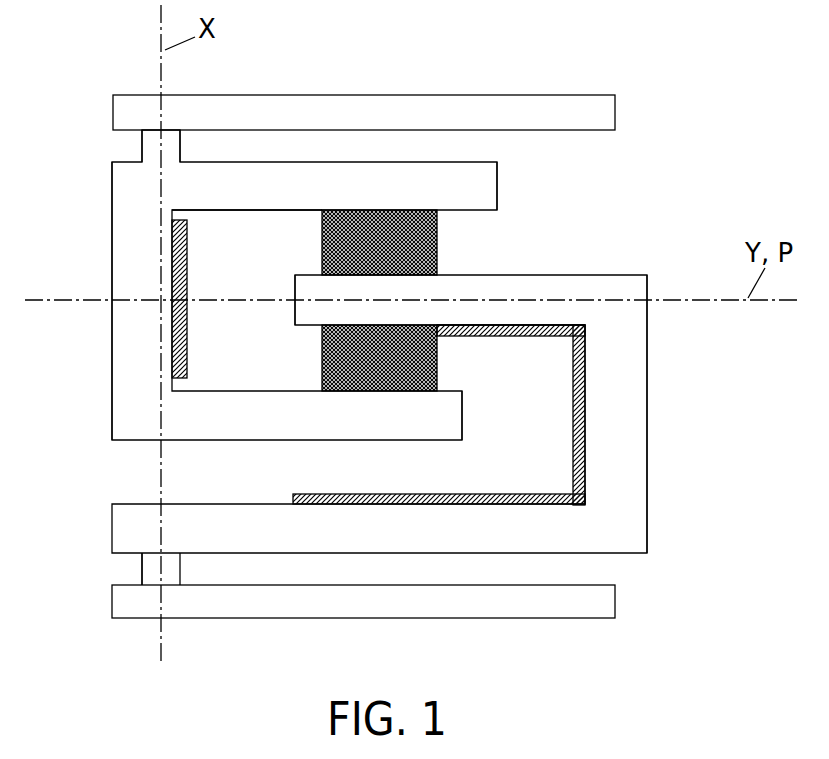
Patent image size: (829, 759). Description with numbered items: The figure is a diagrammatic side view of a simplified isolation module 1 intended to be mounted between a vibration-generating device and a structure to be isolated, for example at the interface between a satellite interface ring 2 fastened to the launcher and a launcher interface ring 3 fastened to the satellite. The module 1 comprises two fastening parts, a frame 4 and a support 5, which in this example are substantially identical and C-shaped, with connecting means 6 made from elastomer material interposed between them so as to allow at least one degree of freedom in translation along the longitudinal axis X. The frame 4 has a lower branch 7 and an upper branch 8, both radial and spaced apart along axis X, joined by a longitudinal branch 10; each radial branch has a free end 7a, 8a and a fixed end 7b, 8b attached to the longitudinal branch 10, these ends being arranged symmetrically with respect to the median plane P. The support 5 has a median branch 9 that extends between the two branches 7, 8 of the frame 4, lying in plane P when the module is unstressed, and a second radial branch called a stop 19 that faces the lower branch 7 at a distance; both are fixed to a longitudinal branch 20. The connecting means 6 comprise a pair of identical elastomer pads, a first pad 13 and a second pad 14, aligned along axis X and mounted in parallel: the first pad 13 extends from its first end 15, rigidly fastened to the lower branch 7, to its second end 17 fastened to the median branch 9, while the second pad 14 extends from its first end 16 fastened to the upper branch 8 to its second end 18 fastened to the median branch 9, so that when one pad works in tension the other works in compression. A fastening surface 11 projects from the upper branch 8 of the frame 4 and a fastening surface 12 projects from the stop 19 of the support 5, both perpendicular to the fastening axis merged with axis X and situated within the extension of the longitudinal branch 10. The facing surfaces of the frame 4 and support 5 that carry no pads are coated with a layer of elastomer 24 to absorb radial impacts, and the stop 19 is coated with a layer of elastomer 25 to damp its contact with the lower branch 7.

The isolation module 1 is at (134, 478).
The satellite interface ring 2 is at (196, 621).
The launcher interface ring 3 is at (570, 95).
The frame 4 is at (304, 292).
The support 5 is at (391, 431).
The connecting means 6 is at (394, 297).
The lower branch 7 is at (378, 430).
The free end of lower branch 7a is at (463, 408).
The fixed end of lower branch 7b is at (172, 413).
The upper branch 8 is at (450, 177).
The free end of upper branch 8a is at (497, 186).
The fixed end of upper branch 8b is at (173, 183).
The median branch 9 is at (555, 292).
The longitudinal branch 10 is at (130, 345).
The fastening surface 11 is at (153, 130).
The fastening surface 12 is at (150, 585).
The first elastomer pad 13 is at (320, 372).
The second elastomer pad 14 is at (440, 240).
The first end of first pad 15 is at (440, 388).
The first end of second pad 16 is at (320, 212).
The second end of first pad 17 is at (296, 327).
The second end of second pad 18 is at (440, 272).
The stop 19 is at (528, 535).
The longitudinal branch 20 is at (618, 397).
The layer of elastomer 24 is at (187, 268).
The layer of elastomer 25 is at (378, 493).